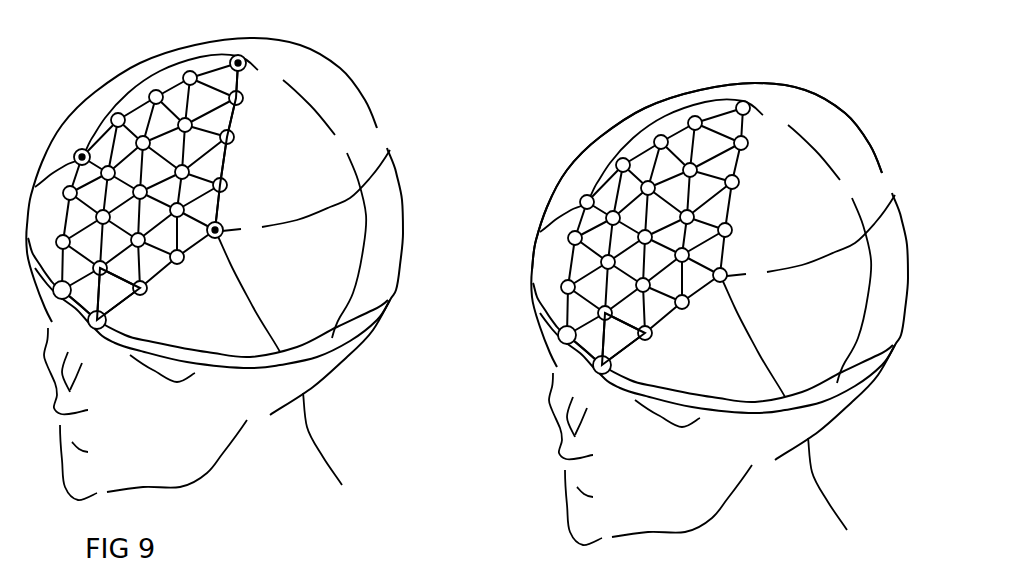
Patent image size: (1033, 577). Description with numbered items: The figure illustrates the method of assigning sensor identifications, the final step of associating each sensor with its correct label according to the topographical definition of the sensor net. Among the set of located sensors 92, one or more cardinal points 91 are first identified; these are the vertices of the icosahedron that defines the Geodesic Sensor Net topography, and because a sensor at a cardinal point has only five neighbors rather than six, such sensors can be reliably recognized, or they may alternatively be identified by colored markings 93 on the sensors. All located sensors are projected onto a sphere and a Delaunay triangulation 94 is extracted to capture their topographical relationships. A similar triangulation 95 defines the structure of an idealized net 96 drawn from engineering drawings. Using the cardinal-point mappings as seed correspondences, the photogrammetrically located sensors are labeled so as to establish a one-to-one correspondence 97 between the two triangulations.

The cardinal points 91 is at (75, 148).
The located sensors 92 is at (145, 253).
The colored markings 93 is at (226, 223).
The Delaunay triangulation 94 is at (237, 118).
The triangulation 95 is at (742, 165).
The idealized net 96 is at (663, 97).
The one-to-one correspondence 97 is at (108, 297).